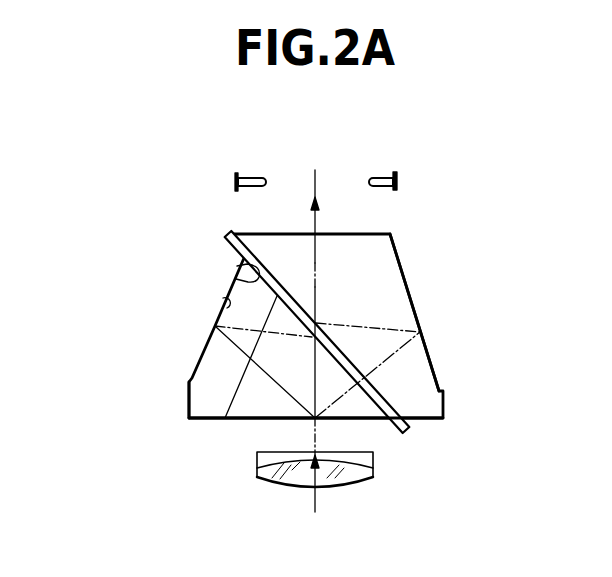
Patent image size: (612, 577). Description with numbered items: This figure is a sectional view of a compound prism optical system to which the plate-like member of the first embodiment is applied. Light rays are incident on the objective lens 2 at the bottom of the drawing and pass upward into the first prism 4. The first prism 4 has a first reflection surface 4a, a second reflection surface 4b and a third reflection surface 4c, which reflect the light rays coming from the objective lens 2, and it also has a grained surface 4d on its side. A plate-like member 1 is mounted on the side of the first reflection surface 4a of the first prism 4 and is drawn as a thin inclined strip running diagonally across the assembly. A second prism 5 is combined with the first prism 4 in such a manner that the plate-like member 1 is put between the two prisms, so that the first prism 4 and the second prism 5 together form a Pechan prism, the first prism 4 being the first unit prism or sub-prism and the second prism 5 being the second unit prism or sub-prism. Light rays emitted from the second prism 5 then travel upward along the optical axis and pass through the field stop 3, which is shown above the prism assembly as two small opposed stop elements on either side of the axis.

The plate-like member 1 is at (407, 430).
The objective lens 2 is at (345, 475).
The field stop 3 is at (387, 178).
The first prism 4 is at (213, 362).
The first reflection surface 4a is at (236, 277).
The second reflection surface 4b is at (223, 305).
The third reflection surface 4c is at (268, 419).
The grained surface 4d is at (188, 407).
The second prism 5 is at (378, 268).